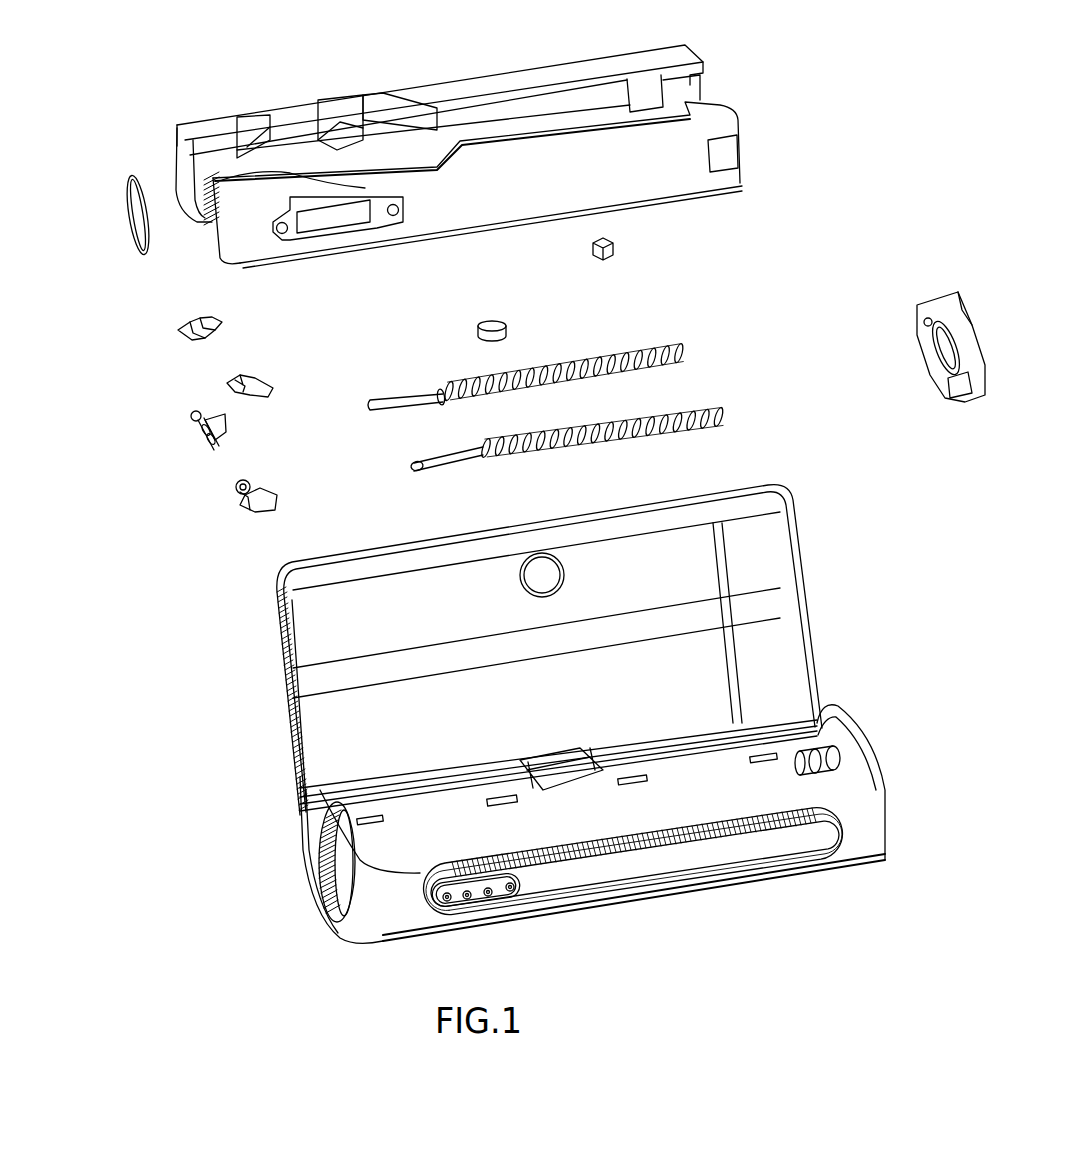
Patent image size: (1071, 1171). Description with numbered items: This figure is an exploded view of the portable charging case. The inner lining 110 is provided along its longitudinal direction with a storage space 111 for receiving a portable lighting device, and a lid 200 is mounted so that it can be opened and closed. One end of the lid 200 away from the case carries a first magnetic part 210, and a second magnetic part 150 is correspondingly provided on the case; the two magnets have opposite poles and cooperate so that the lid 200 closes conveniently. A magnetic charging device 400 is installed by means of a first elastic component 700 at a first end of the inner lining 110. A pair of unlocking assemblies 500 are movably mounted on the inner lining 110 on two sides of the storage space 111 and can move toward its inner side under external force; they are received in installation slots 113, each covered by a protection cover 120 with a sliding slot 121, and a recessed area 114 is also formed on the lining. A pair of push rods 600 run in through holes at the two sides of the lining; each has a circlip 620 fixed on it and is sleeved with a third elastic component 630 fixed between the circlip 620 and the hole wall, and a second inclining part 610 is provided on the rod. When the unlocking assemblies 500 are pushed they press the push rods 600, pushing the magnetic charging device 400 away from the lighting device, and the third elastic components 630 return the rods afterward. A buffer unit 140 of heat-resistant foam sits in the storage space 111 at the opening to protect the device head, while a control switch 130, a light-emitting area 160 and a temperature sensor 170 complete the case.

The inner lining 110 is at (506, 83).
The storage space 111 is at (333, 177).
The installation slot 113 is at (340, 130).
The recessed area 114 is at (280, 140).
The protection cover 120 is at (232, 382).
The sliding slot 121 is at (192, 327).
The control switch 130 is at (497, 892).
The buffer unit 140 is at (132, 180).
The second magnetic part 150 is at (488, 317).
The light-emitting area 160 is at (343, 868).
The temperature sensor 170 is at (612, 248).
The lid 200 is at (780, 547).
The first magnetic part 210 is at (542, 568).
The magnetic charging device 400 is at (948, 308).
The unlocking assembly 500 is at (242, 498).
The push rod 600 is at (422, 400).
The second inclining part 610 is at (412, 465).
The circlip 620 is at (438, 393).
The third elastic component 630 is at (568, 370).
The first elastic component 700 is at (813, 753).